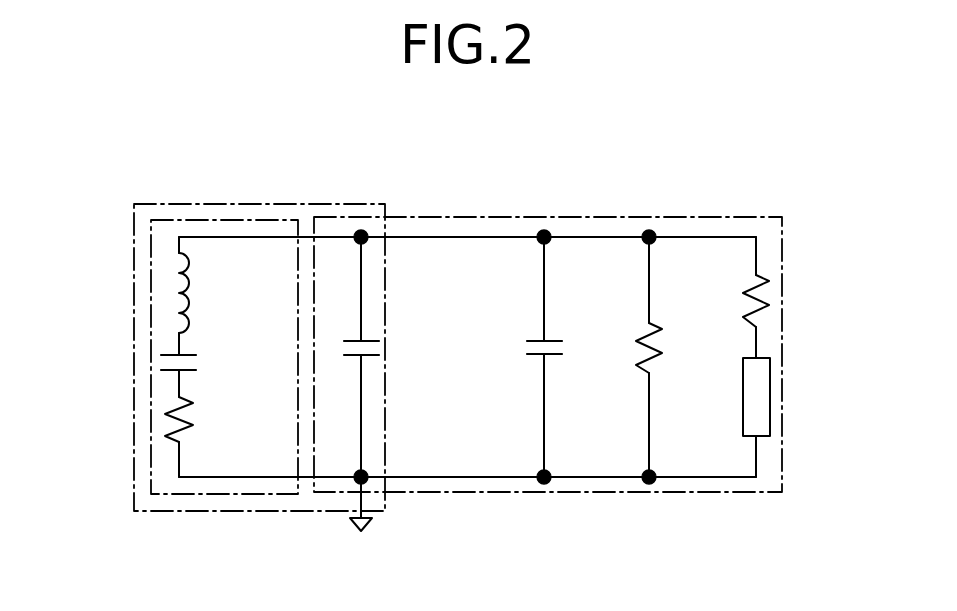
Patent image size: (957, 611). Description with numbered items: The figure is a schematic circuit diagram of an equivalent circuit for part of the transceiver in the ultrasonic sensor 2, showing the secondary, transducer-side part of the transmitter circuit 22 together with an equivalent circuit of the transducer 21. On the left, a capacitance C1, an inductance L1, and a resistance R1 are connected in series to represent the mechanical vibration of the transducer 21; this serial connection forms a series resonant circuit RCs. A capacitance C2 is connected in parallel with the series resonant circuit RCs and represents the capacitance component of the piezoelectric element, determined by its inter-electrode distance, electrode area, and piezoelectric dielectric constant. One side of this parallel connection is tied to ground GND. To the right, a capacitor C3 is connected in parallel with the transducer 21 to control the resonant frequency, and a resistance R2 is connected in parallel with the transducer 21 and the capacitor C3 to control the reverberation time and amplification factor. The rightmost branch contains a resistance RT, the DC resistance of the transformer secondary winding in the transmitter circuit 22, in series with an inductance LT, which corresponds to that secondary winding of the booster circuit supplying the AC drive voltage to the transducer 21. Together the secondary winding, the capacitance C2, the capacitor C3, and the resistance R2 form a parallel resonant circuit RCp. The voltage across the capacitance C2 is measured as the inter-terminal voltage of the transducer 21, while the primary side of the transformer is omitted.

The ultrasonic sensor 2 is at (112, 176).
The transducer 21 is at (317, 202).
The transmitter circuit 22 is at (808, 210).
The series resonant circuit RCs is at (225, 495).
The parallel resonant circuit RCp is at (492, 495).
The inductance L1 is at (202, 293).
The capacitance C1 is at (197, 363).
The resistance R1 is at (199, 419).
The capacitance C2 is at (382, 348).
The capacitor C3 is at (524, 348).
The resistance R2 is at (663, 334).
The resistance RT is at (779, 301).
The inductance LT is at (777, 397).
The ground GND is at (361, 517).